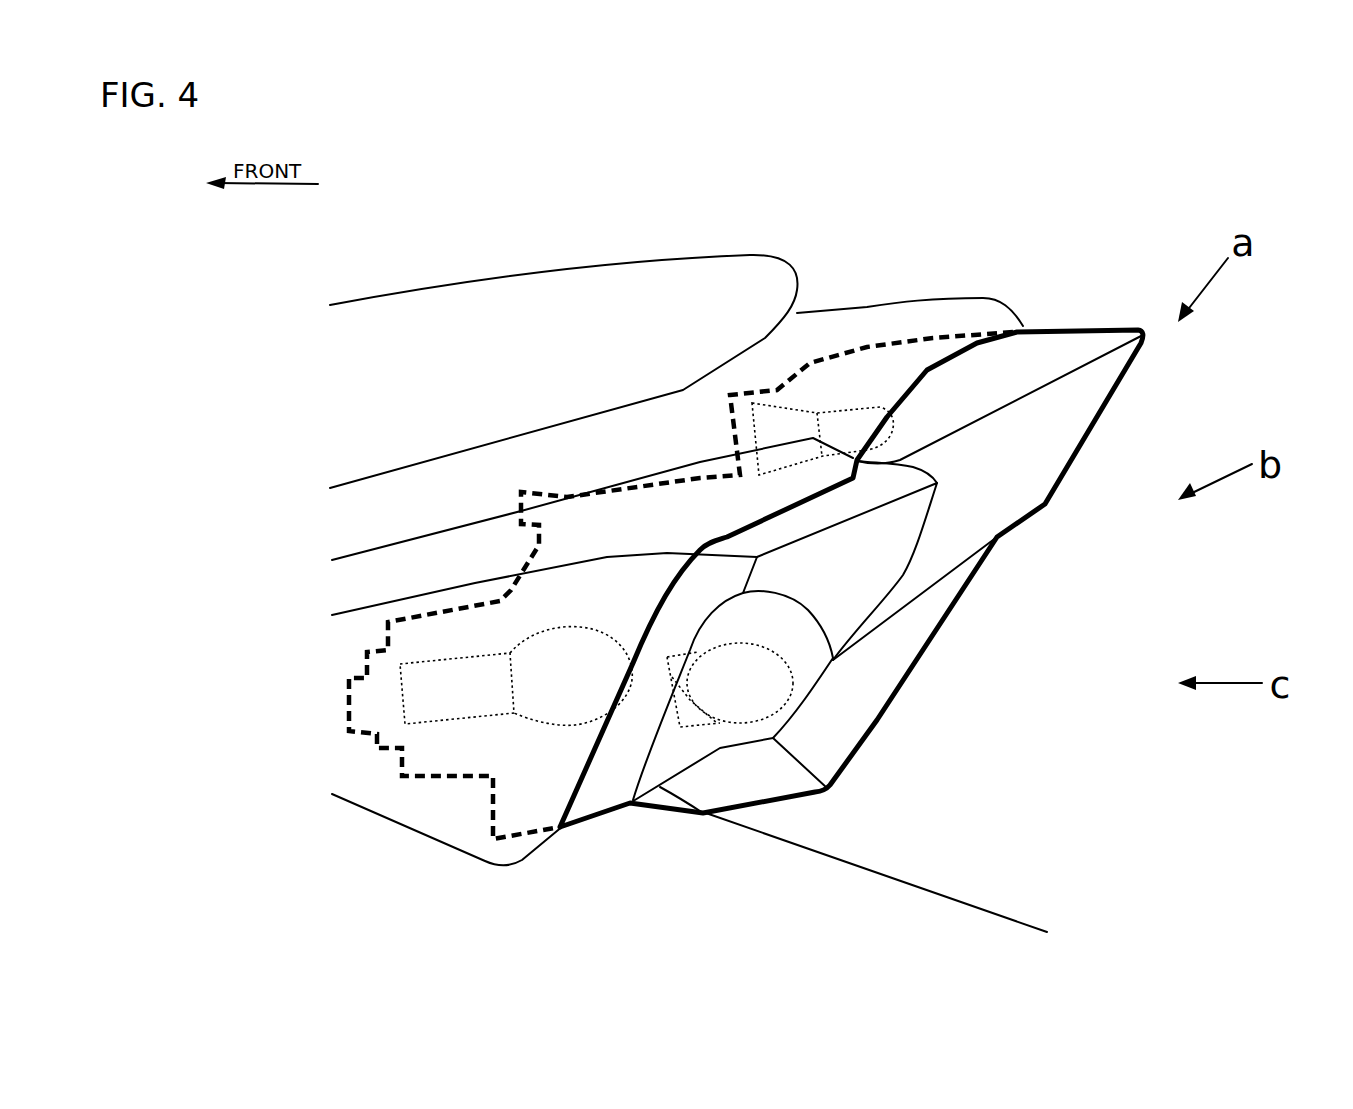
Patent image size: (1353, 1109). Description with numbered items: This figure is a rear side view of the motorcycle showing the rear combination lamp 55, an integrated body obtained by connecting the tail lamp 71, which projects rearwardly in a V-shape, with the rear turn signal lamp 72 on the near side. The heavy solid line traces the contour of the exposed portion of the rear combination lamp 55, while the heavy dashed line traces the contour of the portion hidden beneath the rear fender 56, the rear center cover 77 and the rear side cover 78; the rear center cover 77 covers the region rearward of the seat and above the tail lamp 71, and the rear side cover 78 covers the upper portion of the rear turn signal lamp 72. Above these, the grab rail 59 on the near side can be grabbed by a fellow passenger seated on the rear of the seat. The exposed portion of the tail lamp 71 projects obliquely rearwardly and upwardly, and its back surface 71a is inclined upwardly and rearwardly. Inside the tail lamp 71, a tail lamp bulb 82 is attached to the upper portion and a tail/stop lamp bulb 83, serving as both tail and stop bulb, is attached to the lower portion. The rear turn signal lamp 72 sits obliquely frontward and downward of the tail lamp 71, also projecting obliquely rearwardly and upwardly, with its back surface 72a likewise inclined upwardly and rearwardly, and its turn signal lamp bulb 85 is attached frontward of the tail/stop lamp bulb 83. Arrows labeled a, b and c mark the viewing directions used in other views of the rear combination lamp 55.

The rear combination lamp 55 is at (1053, 321).
The rear fender 56 is at (933, 907).
The grab rail 59 is at (472, 305).
The tail lamp 71 is at (1107, 323).
The back surface of the tail lamp 71a is at (1093, 427).
The rear turn signal lamp 72 is at (902, 572).
The back surface of the rear turn signal lamp 72a is at (877, 623).
The rear center cover 77 is at (882, 313).
The rear side cover 78 is at (463, 542).
The tail lamp bulb 82 is at (840, 405).
The tail/stop lamp bulb 83 is at (748, 717).
The turn signal lamp bulb 85 is at (580, 727).